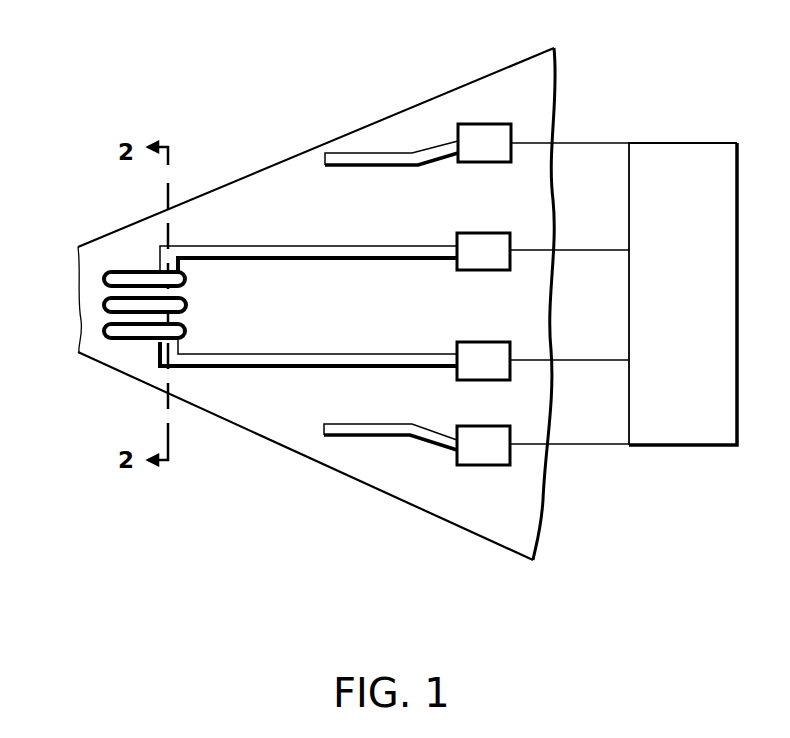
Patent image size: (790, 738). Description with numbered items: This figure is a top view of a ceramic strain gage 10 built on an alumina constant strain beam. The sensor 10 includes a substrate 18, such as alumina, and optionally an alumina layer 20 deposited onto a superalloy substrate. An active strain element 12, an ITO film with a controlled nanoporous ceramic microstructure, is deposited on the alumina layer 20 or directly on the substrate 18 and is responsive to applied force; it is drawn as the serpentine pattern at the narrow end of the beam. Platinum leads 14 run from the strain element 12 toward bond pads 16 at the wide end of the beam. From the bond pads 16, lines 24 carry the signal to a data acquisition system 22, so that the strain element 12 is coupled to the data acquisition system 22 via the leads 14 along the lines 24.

The ceramic strain gage 10 is at (336, 61).
The strain element 12 is at (102, 303).
The platinum leads 14 is at (319, 245).
The bond pads 16 is at (470, 271).
The substrate 18 is at (277, 446).
The alumina layer 20 is at (268, 182).
The data acquisition system 22 is at (698, 308).
The lines 24 is at (588, 248).